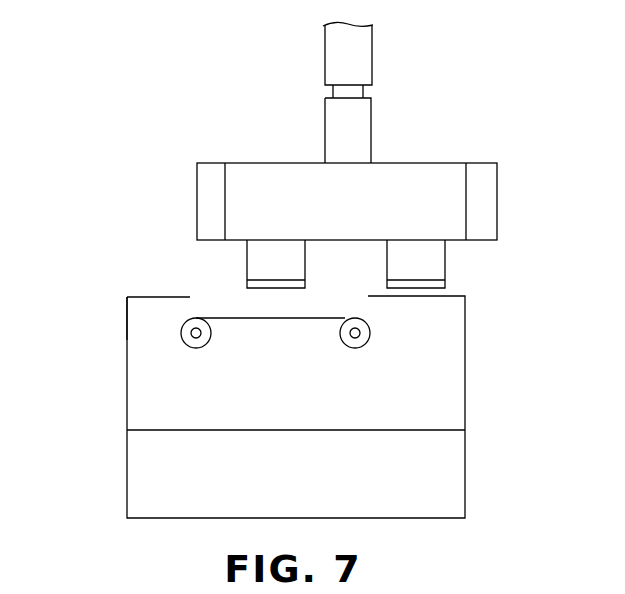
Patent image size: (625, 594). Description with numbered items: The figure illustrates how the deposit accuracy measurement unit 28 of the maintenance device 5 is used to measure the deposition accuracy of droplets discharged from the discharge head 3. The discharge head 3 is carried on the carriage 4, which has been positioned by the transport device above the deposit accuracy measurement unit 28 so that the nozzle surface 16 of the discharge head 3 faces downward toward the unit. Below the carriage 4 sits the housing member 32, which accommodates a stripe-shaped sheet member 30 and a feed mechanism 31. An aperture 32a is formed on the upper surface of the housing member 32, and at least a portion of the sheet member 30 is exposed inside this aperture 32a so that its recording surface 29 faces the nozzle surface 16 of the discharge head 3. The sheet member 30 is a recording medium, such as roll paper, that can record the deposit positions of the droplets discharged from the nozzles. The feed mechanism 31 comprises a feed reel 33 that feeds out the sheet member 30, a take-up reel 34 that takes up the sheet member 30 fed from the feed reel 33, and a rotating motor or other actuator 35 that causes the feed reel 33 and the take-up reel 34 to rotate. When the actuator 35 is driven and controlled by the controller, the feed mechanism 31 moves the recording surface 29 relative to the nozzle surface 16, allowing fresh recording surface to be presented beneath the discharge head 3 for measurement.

The discharge head 3 is at (247, 250).
The carriage 4 is at (426, 163).
The maintenance device 5 is at (512, 349).
The nozzle surface 16 is at (294, 294).
The deposit accuracy measurement unit 28 is at (118, 306).
The recording surface 29 is at (242, 316).
The sheet member 30 is at (288, 318).
The feed mechanism 31 is at (222, 352).
The housing member 32 is at (466, 392).
The aperture 32a is at (212, 302).
The feed reel 33 is at (360, 347).
The take-up reel 34 is at (186, 345).
The actuator 35 is at (182, 331).